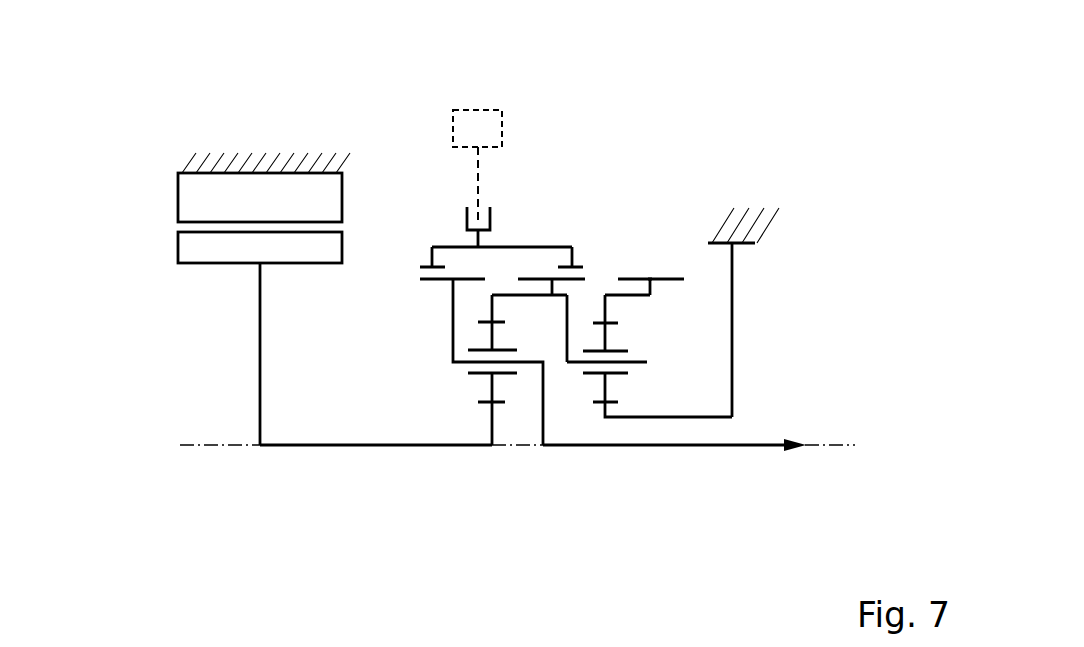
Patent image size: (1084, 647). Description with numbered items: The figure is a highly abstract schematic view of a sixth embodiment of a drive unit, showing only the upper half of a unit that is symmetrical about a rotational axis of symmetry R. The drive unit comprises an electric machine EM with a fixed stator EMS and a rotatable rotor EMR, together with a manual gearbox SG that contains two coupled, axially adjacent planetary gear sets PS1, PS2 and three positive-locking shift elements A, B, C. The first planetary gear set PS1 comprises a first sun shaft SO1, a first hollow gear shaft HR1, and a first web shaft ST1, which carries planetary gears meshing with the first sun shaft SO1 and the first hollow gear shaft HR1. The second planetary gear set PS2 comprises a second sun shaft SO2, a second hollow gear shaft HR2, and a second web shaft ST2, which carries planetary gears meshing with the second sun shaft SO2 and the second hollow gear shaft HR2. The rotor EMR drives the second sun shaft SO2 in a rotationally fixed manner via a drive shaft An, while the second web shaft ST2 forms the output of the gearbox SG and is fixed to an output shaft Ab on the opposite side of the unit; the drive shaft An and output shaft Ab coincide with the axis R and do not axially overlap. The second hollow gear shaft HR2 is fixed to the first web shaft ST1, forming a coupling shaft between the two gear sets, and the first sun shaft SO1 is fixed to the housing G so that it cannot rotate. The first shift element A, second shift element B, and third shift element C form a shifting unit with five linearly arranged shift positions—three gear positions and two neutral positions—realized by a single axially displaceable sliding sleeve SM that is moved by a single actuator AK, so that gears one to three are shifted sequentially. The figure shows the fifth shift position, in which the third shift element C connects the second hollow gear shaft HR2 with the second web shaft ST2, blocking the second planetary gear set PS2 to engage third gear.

The electric machine EM is at (199, 299).
The stator EMS is at (185, 203).
The rotor EMR is at (185, 247).
The sliding sleeve SM is at (440, 221).
The actuator AK is at (480, 100).
The third shift element C is at (570, 229).
The second shift element B is at (624, 267).
The first shift element A is at (672, 267).
The gearbox SG is at (605, 307).
The housing G is at (754, 191).
The first hollow gear shaft HR1 is at (605, 308).
The first web shaft ST1 is at (640, 362).
The first sun shaft SO1 is at (605, 417).
The second hollow gear shaft HR2 is at (490, 308).
The second web shaft ST2 is at (460, 365).
The second sun shaft SO2 is at (490, 417).
The first planetary gear set PS1 is at (752, 414).
The second planetary gear set PS2 is at (420, 445).
The rotational axis of symmetry R is at (190, 447).
The drive shaft An is at (287, 447).
The output shaft Ab is at (678, 447).